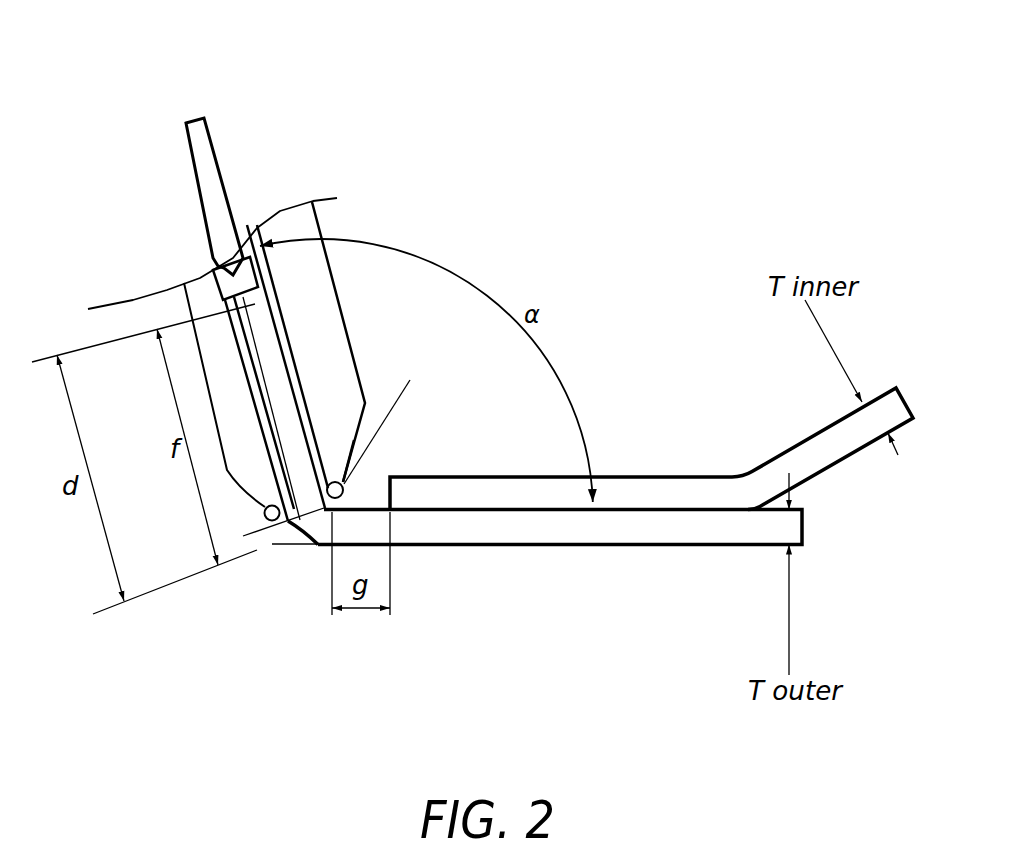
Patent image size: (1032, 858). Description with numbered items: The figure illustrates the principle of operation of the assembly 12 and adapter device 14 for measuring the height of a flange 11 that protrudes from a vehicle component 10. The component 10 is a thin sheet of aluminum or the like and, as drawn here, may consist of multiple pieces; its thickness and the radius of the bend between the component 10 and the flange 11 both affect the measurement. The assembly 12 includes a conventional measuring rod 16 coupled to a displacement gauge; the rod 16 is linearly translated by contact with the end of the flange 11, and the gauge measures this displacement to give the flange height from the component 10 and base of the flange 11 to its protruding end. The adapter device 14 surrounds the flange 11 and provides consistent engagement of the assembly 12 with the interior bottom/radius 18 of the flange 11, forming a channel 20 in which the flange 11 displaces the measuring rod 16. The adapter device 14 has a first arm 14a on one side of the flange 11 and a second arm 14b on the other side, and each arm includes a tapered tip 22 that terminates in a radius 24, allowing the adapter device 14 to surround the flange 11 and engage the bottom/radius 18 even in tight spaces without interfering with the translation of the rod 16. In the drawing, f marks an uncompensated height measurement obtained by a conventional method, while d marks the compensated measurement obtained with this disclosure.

The vehicle component 10 is at (485, 493).
The flange 11 is at (297, 361).
The assembly 12 is at (264, 186).
The adapter device 14 is at (365, 338).
The first arm 14a is at (374, 388).
The second arm 14b is at (217, 353).
The measuring rod 16 is at (213, 100).
The interior bottom/radius of the flange 18 is at (313, 564).
The channel 20 is at (285, 468).
The tapered tip 22 is at (375, 448).
The radius 24 is at (354, 513).